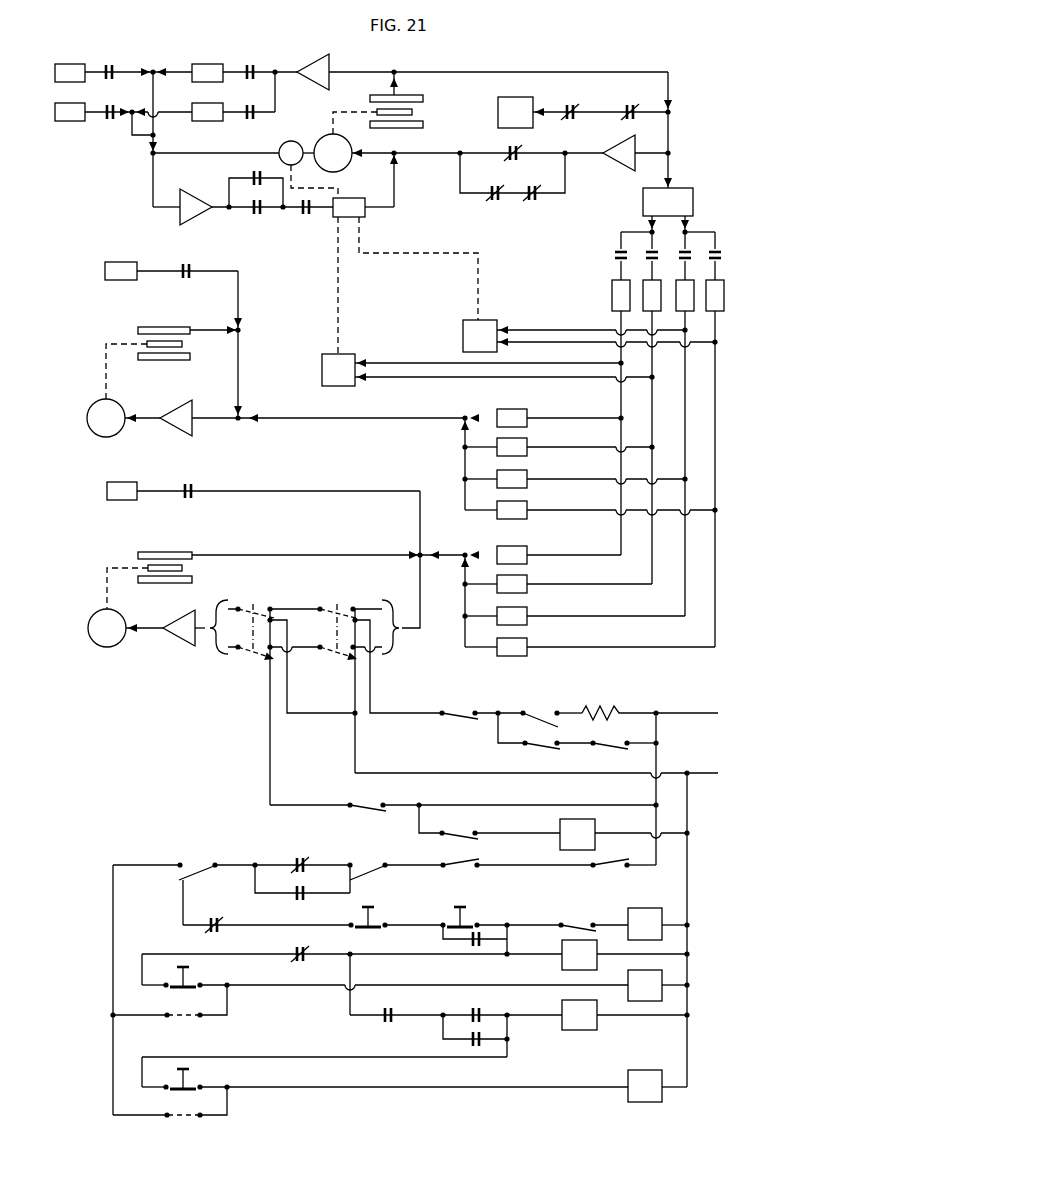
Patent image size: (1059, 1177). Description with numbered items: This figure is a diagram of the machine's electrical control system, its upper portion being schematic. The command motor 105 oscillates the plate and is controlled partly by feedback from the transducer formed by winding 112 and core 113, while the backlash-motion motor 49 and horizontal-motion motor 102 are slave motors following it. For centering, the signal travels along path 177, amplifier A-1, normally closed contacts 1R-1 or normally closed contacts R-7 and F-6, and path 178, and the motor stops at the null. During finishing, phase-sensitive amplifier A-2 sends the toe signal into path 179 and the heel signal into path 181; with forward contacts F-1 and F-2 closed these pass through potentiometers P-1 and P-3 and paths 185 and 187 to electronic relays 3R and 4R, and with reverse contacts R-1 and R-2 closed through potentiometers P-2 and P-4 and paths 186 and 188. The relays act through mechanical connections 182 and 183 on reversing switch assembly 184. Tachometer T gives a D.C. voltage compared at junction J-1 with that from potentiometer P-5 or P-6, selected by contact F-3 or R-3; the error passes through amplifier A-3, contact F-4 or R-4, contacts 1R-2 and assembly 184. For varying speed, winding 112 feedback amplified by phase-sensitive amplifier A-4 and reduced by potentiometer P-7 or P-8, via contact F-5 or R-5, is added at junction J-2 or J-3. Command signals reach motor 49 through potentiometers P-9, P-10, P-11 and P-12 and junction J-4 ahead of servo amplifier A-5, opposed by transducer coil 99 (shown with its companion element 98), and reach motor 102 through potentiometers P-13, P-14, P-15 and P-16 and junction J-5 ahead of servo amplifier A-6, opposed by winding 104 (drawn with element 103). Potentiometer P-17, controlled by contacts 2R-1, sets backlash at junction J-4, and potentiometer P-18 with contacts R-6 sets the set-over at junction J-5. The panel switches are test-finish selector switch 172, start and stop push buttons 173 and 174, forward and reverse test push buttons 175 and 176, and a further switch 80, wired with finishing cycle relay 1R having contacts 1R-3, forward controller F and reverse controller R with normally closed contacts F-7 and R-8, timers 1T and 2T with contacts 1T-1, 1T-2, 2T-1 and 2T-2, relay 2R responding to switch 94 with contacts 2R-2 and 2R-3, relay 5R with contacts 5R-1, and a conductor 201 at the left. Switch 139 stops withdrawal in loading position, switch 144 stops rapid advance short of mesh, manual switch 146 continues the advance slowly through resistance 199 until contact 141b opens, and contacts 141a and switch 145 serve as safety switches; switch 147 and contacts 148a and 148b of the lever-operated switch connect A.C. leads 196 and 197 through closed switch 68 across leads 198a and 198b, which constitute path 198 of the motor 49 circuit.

The backlash-motion motor 49 is at (97, 612).
The switch 68 is at (463, 712).
The switch 80 is at (367, 863).
The switch 94 is at (458, 833).
The photocell 98 is at (182, 568).
The transducer coil 99 is at (160, 553).
The horizontal-motion motor 102 is at (92, 405).
The photocell 103 is at (182, 344).
The transducer winding 104 is at (170, 330).
The command motor 105 is at (326, 136).
The transducer winding 112 is at (412, 97).
The transducer core 113 is at (412, 112).
The switch 139 is at (366, 803).
The switch contacts 141a is at (338, 605).
The switch contact 141b is at (464, 867).
The switch 144 is at (616, 747).
The switch 145 is at (615, 866).
The switch 146 is at (546, 720).
The switch 147 is at (543, 747).
The switch contacts 148a is at (254, 605).
The switch contacts 148b is at (575, 927).
The test-finish selector switch 172 is at (195, 865).
The start switch 173 is at (455, 905).
The stop switch 174 is at (362, 925).
The forward push button switch 175 is at (194, 1089).
The reverse push button switch 176 is at (194, 987).
The path 177 is at (577, 72).
The path 178 is at (381, 153).
The path 179 is at (650, 224).
The path 181 is at (688, 224).
The mechanical connection 182 is at (340, 276).
The mechanical connection 183 is at (480, 274).
The reversing switch assembly 184 is at (352, 198).
The path 185 is at (622, 402).
The path 186 is at (653, 417).
The path 187 is at (686, 434).
The path 188 is at (716, 456).
The A.C. lead 196 is at (707, 712).
The A.C. lead 197 is at (697, 771).
The path 198 is at (305, 623).
The lead 198a is at (305, 648).
The lead 198b is at (305, 609).
The resistance 199 is at (598, 712).
The conductor 201 is at (113, 1077).
The potentiometer P-1 is at (618, 294).
The potentiometer P-2 is at (650, 307).
The potentiometer P-3 is at (684, 308).
The potentiometer P-4 is at (721, 294).
The potentiometer P-5 is at (58, 65).
The potentiometer P-6 is at (62, 120).
The potentiometer P-7 is at (208, 68).
The potentiometer P-8 is at (206, 121).
The potentiometer P-9 is at (520, 551).
The potentiometer P-10 is at (520, 581).
The potentiometer P-11 is at (520, 613).
The potentiometer P-12 is at (520, 644).
The potentiometer P-13 is at (520, 413).
The potentiometer P-14 is at (520, 443).
The potentiometer P-15 is at (520, 475).
The potentiometer P-16 is at (520, 506).
The potentiometer P-17 is at (120, 482).
The potentiometer P-18 is at (120, 262).
The forward controller contacts F-1 is at (618, 252).
The forward controller contacts F-2 is at (692, 255).
The forward controller contact F-3 is at (112, 64).
The forward controller contact F-4 is at (256, 214).
The forward controller contact F-5 is at (250, 63).
The forward controller contacts F-6 is at (492, 200).
The forward controller contacts F-7 is at (572, 106).
The forward controller F is at (645, 1086).
The reverse controller contacts R-1 is at (647, 254).
The reverse controller contacts R-2 is at (722, 256).
The reverse controller contact R-3 is at (109, 120).
The reverse controller contact R-4 is at (252, 172).
The reverse controller contact R-5 is at (250, 120).
The reverse controller contacts R-6 is at (186, 279).
The reverse controller contacts R-7 is at (535, 200).
The reverse controller contacts R-8 is at (633, 105).
The reverse controller R is at (645, 985).
The amplifier A-1 is at (620, 146).
The phase-sensitive amplifier A-2 is at (668, 202).
The amplifier A-3 is at (182, 218).
The phase-sensitive amplifier A-4 is at (321, 60).
The servo amplifier A-5 is at (175, 636).
The servo amplifier A-6 is at (175, 412).
The junction J-1 is at (152, 156).
The junction J-2 is at (156, 76).
The junction J-3 is at (152, 139).
The junction J-4 is at (419, 553).
The junction J-5 is at (243, 412).
The finishing cycle relay 1R is at (645, 924).
The relay contacts 1R-1 is at (520, 148).
The relay contacts 1R-2 is at (303, 214).
The relay contacts 1R-3 is at (470, 940).
The relay 2R is at (577, 834).
The relay contacts 2R-1 is at (186, 484).
The relay contacts 2R-2 is at (294, 898).
The relay contacts 2R-3 is at (300, 860).
The electronic relay 3R is at (338, 370).
The electronic relay 4R is at (480, 336).
The electronic relay 5R is at (515, 112).
The relay contacts 5R-1 is at (471, 1010).
The timer 1T is at (579, 955).
The timer contacts 1T-1 is at (297, 949).
The timer contacts 1T-2 is at (385, 1022).
The timer 2T is at (579, 1015).
The timer contacts 2T-1 is at (470, 1046).
The timer contacts 2T-2 is at (214, 918).
The tachometer T is at (291, 153).